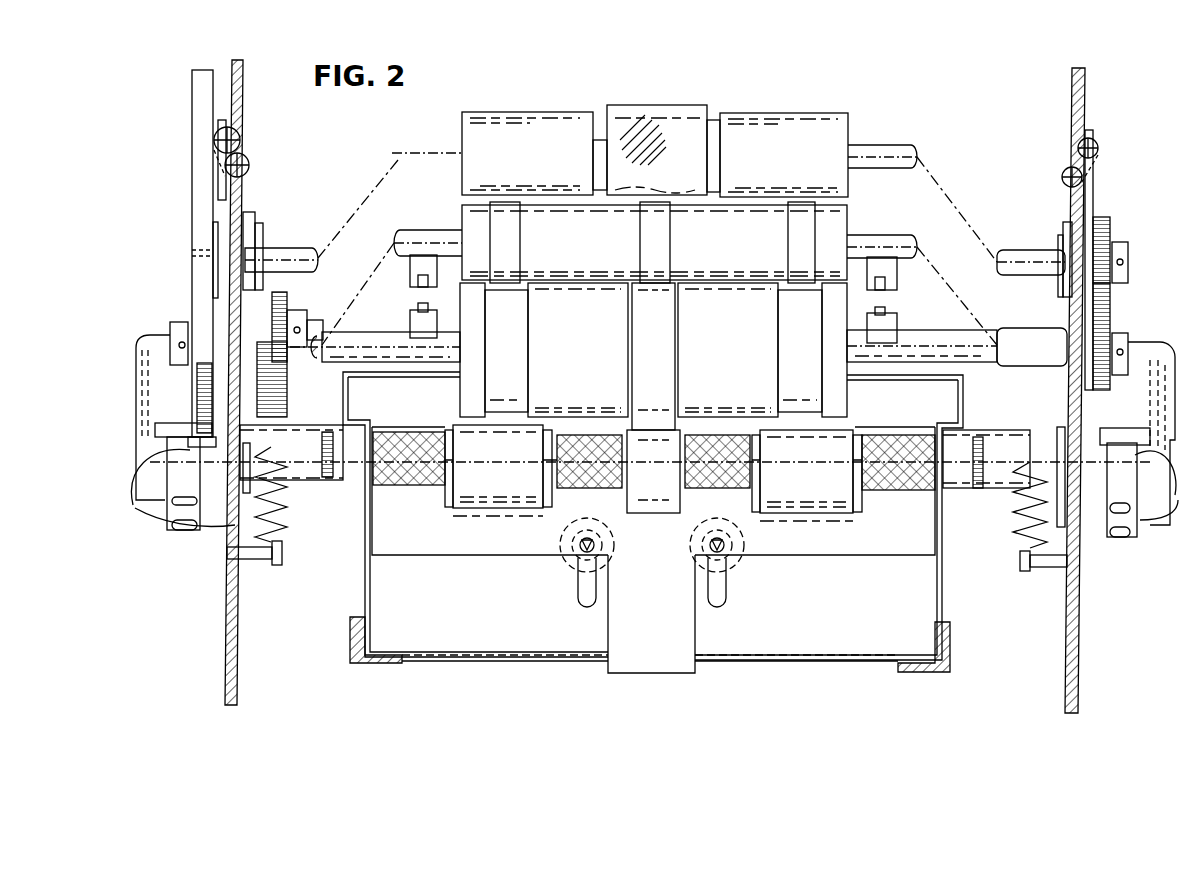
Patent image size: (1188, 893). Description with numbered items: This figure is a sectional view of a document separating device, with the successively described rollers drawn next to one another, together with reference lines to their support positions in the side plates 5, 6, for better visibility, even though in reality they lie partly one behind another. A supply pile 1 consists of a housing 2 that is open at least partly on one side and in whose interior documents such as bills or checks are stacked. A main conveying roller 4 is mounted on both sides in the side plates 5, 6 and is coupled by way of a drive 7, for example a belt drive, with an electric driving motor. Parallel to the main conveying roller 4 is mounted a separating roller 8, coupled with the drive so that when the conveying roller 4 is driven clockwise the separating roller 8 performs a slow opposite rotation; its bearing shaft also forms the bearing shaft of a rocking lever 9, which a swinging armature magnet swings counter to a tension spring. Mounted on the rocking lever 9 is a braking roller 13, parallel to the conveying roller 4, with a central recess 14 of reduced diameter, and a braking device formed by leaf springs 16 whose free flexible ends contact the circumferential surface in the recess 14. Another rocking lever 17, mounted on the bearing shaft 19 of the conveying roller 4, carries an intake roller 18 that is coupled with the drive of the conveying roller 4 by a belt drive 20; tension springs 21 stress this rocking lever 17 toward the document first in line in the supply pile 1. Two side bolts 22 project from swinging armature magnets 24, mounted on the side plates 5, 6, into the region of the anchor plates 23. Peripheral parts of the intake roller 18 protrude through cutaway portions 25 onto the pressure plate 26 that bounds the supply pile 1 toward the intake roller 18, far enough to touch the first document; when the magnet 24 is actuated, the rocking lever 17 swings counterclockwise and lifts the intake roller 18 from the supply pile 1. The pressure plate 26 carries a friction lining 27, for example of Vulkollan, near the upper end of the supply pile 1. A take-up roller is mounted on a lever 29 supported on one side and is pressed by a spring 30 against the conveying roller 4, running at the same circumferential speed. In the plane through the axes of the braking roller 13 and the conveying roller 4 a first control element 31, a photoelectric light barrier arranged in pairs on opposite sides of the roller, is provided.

The supply pile 1 is at (778, 665).
The housing 2 is at (945, 595).
The main conveying roller 4 is at (770, 375).
The side plate 5 is at (228, 640).
The side plate 6 is at (1075, 660).
The drive 7 is at (186, 282).
The separating roller 8 is at (840, 222).
The rocking lever 9 is at (255, 298).
The braking roller 13 is at (780, 125).
The central recess 14 is at (713, 122).
The leaf springs 16 is at (648, 110).
The rocking lever 17 is at (232, 548).
The intake roller 18 is at (490, 513).
The bearing shaft 19 is at (355, 345).
The belt drive 20 is at (655, 420).
The tension springs 21 is at (288, 512).
The side bolts 22 is at (170, 425).
The anchor plates 23 is at (178, 505).
The swinging armature magnets 24 is at (150, 345).
The cutaway portions 25 is at (447, 500).
The pressure plate 26 is at (388, 543).
The friction lining 27 is at (413, 450).
The lever 29 is at (213, 188).
The spring 30 is at (245, 150).
The first control element 31 is at (422, 305).